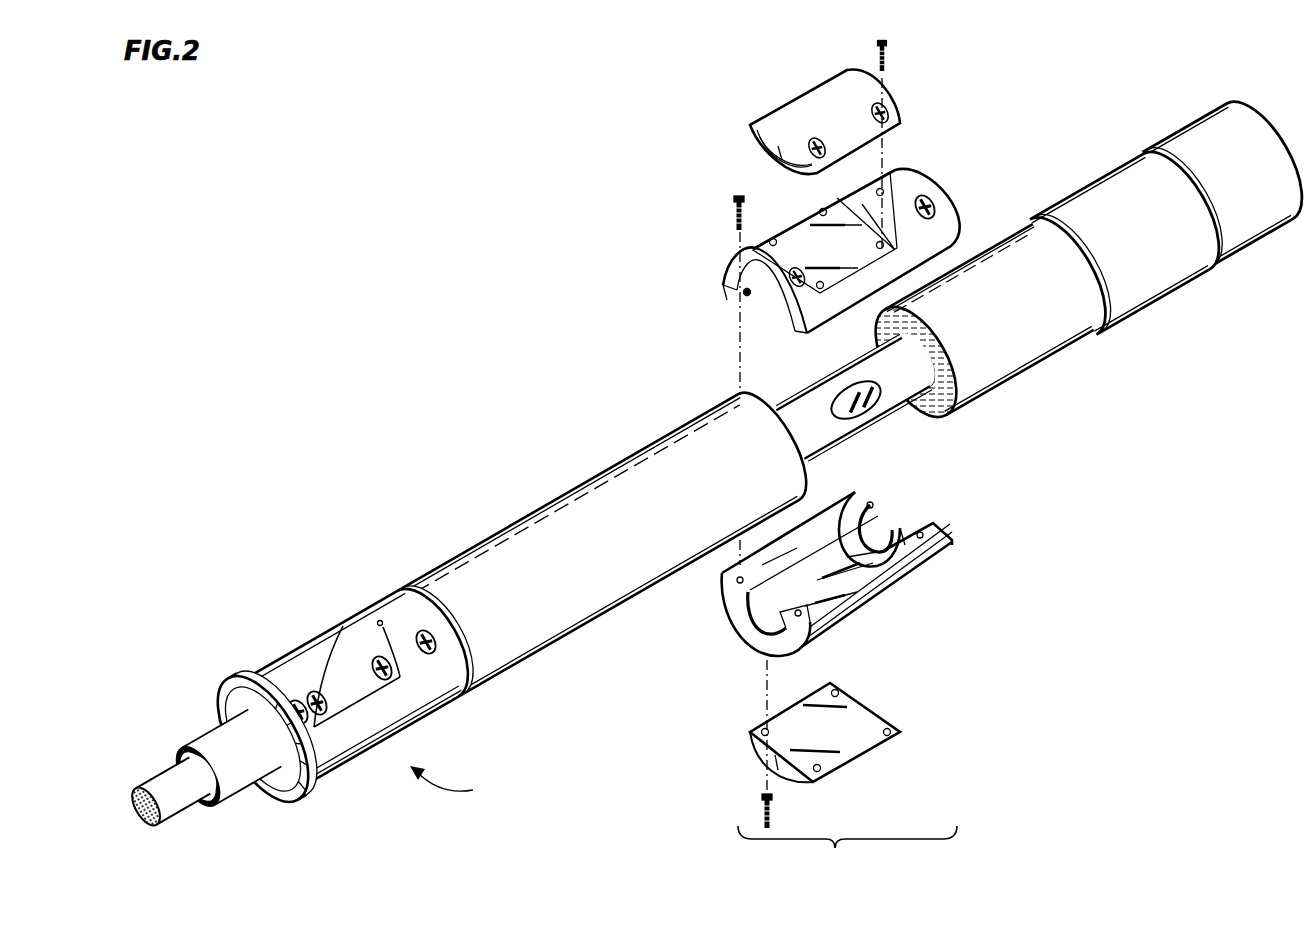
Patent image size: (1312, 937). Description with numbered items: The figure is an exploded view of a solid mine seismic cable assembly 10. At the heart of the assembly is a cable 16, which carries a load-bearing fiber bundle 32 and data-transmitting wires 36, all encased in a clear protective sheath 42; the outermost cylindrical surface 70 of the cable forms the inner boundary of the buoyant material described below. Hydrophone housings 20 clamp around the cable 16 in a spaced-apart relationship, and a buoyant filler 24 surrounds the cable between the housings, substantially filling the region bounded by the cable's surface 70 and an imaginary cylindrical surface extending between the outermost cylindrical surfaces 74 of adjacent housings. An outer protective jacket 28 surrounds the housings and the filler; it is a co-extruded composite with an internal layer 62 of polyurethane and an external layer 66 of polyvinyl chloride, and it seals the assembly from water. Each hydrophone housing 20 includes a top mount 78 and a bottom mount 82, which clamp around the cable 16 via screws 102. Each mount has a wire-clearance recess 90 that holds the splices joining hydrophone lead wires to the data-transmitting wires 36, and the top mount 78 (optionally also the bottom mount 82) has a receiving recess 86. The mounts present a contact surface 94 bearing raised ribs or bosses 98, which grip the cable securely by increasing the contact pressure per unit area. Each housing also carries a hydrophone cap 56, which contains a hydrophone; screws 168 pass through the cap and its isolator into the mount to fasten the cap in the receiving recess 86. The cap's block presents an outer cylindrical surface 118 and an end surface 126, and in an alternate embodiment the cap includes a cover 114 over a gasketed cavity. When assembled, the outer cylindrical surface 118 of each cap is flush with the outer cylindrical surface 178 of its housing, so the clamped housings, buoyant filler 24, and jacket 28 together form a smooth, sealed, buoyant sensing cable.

The cable assembly 10 is at (1109, 564).
The cable 16 is at (867, 423).
The hydrophone housing 20 is at (683, 823).
The buoyant filler 24 is at (575, 637).
The outer protective jacket 28 is at (1218, 175).
The load-bearing fiber bundle 32 is at (193, 812).
The data-transmitting wires 36 is at (848, 385).
The protective sheath 42 is at (226, 724).
The hydrophone cap 56 is at (905, 110).
The internal layer 62 is at (1140, 315).
The external layer 66 is at (1175, 132).
The outermost cylindrical surface 70 is at (808, 391).
The outermost cylindrical surface 74 is at (355, 603).
The top mount 78 is at (940, 210).
The bottom mount 82 is at (912, 588).
The receiving recess 86 is at (807, 221).
The wire-clearance recess 90 is at (855, 495).
The contact surface 94 is at (855, 608).
The bosses 98 is at (838, 521).
The screws 102 is at (732, 213).
The cover 114 is at (863, 716).
The outer cylindrical surface 118 is at (818, 92).
The end surface 126 is at (762, 134).
The screws 168 is at (891, 58).
The outer cylindrical surface 178 is at (405, 690).